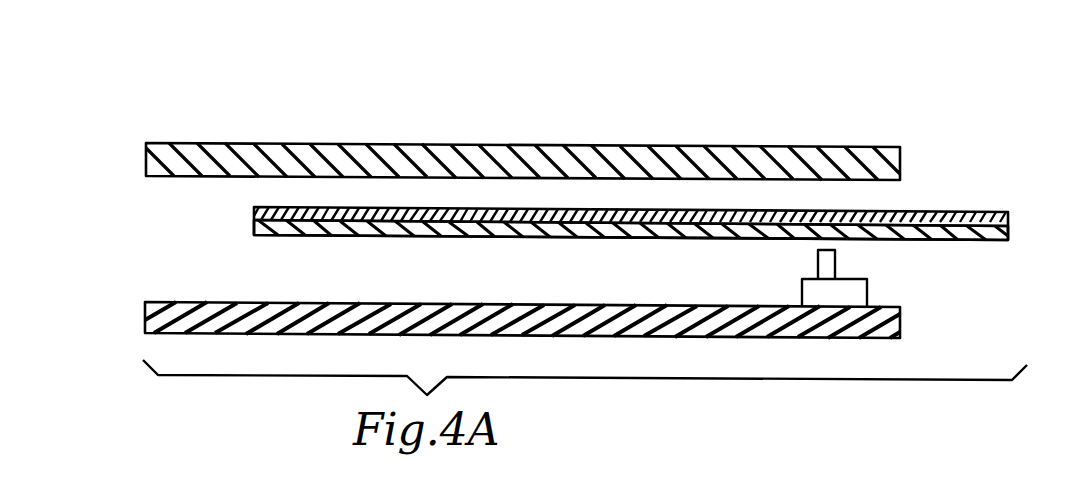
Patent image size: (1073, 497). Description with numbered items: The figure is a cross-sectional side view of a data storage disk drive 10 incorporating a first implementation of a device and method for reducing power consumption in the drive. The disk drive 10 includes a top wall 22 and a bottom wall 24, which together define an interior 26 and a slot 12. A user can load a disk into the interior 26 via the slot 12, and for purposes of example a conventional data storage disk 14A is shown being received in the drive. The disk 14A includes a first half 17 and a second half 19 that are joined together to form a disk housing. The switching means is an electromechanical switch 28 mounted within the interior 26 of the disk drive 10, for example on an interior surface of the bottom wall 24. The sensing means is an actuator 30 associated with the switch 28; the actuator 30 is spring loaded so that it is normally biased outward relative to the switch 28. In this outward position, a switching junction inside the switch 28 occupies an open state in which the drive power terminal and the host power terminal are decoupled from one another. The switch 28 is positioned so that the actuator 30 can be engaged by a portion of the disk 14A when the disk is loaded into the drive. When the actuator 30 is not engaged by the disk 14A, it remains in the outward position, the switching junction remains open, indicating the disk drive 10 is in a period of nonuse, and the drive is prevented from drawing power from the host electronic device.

The disk drive 10 is at (145, 118).
The slot 12 is at (888, 198).
The data storage disk 14A is at (957, 210).
The first half 17 is at (983, 212).
The second half 19 is at (1008, 234).
The top wall 22 is at (733, 145).
The bottom wall 24 is at (145, 312).
The interior 26 is at (170, 245).
The electromechanical switch 28 is at (802, 292).
The actuator 30 is at (818, 258).